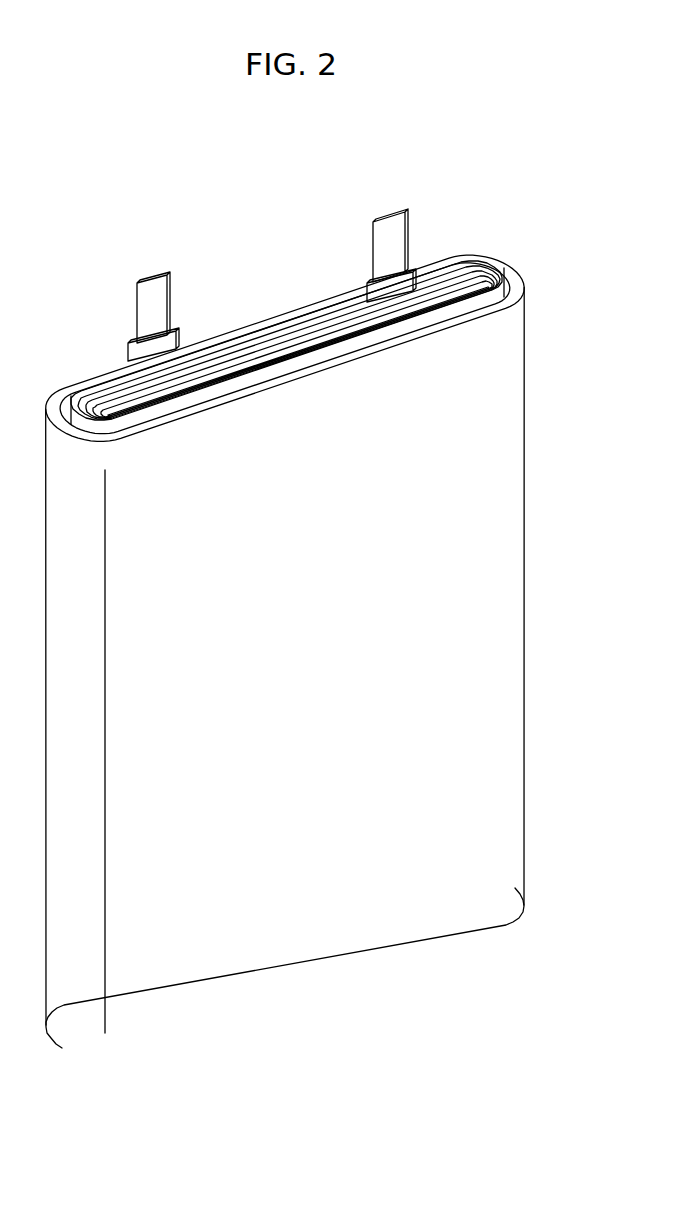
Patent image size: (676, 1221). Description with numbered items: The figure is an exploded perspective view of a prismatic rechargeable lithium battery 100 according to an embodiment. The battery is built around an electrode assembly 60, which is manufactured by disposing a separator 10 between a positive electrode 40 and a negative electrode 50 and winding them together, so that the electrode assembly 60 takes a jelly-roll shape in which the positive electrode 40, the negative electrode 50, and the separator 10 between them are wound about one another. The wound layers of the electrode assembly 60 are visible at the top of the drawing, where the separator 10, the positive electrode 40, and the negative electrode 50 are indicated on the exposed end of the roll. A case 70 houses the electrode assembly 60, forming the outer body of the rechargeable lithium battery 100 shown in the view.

The rechargeable lithium battery 100 is at (218, 219).
The separator 10 is at (490, 260).
The positive electrode 40 is at (503, 263).
The negative electrode 50 is at (474, 262).
The electrode assembly 60 is at (472, 206).
The case 70 is at (512, 520).